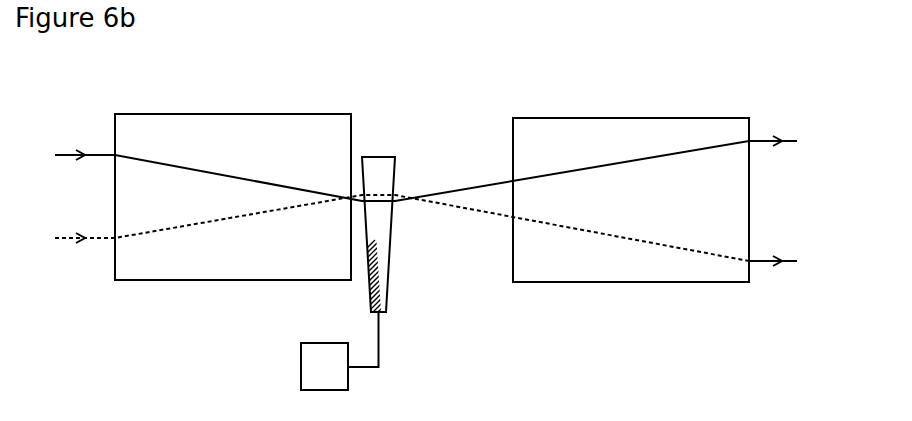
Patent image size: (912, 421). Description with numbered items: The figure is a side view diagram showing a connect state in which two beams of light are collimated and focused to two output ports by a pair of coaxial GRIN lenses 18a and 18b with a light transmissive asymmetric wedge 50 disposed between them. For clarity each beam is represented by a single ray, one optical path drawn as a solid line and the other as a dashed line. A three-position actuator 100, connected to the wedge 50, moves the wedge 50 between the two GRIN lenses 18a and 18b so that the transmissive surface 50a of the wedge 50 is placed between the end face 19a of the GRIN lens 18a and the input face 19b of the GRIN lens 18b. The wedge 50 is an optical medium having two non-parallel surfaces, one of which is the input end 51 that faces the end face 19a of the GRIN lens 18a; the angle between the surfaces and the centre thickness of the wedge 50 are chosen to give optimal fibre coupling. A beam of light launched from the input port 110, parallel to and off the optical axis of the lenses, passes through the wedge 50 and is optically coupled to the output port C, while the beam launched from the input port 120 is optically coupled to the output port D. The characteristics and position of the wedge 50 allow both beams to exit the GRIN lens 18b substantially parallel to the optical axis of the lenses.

The GRIN lens 18a is at (181, 113).
The GRIN lens 18b is at (641, 117).
The end face of the GRIN lens 19a is at (351, 259).
The input face of the GRIN lens 19b is at (513, 132).
The wedge 50 is at (381, 247).
The transmissive surface of the wedge 50a is at (356, 158).
The input end 51 is at (367, 178).
The three-position actuator 100 is at (340, 351).
The input port 110 is at (115, 155).
The input port 120 is at (115, 239).
The output port C is at (749, 141).
The output port D is at (749, 261).